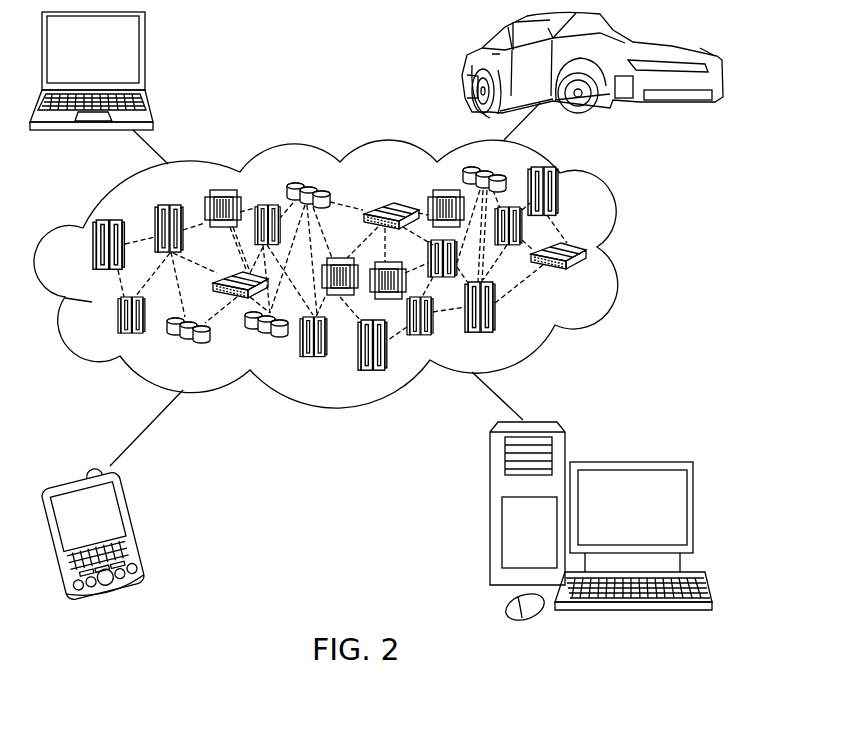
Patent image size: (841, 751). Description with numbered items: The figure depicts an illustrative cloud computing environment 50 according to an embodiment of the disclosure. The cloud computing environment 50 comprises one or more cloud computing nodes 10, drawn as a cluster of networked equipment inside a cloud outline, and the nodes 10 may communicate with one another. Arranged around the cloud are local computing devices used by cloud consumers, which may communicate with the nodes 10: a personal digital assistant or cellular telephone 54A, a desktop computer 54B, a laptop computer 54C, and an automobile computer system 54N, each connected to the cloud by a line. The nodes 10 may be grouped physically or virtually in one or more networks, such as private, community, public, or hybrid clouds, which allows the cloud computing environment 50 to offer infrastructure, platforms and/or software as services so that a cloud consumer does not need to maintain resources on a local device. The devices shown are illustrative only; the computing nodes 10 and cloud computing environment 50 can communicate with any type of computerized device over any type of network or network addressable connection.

The cloud computing environment 50 is at (357, 274).
The cloud computing node 10 is at (592, 278).
The personal digital assistant (PDA) or cellular telephone 54A is at (138, 528).
The desktop computer 54B is at (632, 462).
The laptop computer 54C is at (144, 56).
The automobile computer system 54N is at (470, 68).